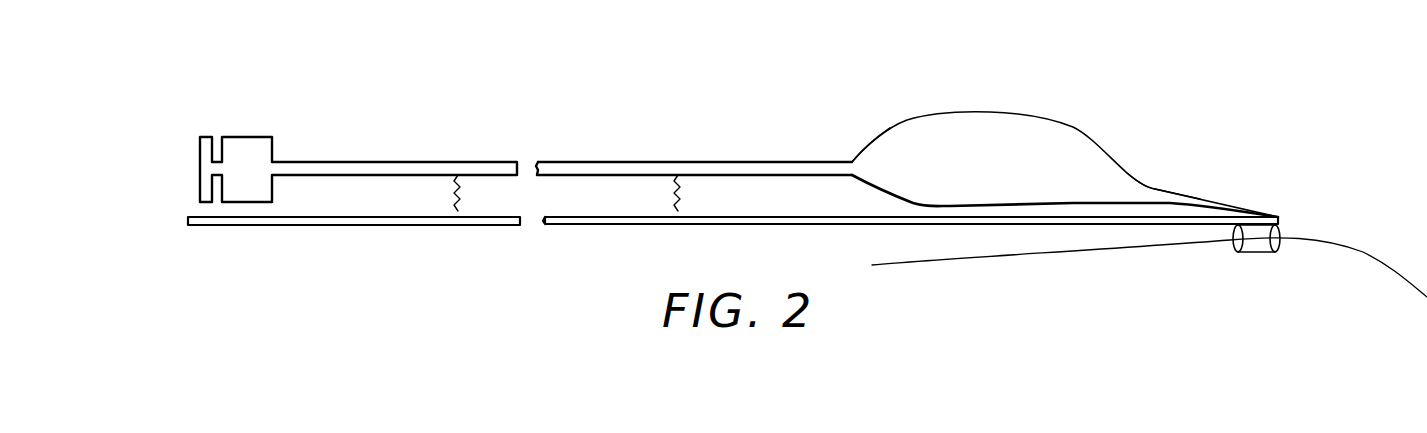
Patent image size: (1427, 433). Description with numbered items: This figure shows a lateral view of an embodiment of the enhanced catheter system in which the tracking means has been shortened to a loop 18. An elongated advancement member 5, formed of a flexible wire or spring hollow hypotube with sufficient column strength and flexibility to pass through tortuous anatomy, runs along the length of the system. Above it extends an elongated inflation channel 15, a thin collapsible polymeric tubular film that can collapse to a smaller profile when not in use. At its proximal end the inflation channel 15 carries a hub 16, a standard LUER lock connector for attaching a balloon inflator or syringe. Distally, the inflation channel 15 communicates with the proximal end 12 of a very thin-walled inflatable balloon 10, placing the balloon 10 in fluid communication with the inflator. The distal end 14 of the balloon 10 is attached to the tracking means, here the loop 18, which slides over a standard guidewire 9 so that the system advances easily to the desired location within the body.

The advancement member 5 is at (468, 225).
The guidewire 9 is at (1353, 245).
The inflatable balloon 10 is at (1013, 128).
The proximal end of balloon 12 is at (868, 146).
The distal end of balloon 14 is at (1155, 188).
The inflation channel 15 is at (464, 162).
The hub 16 is at (253, 152).
The loop 18 is at (1255, 247).